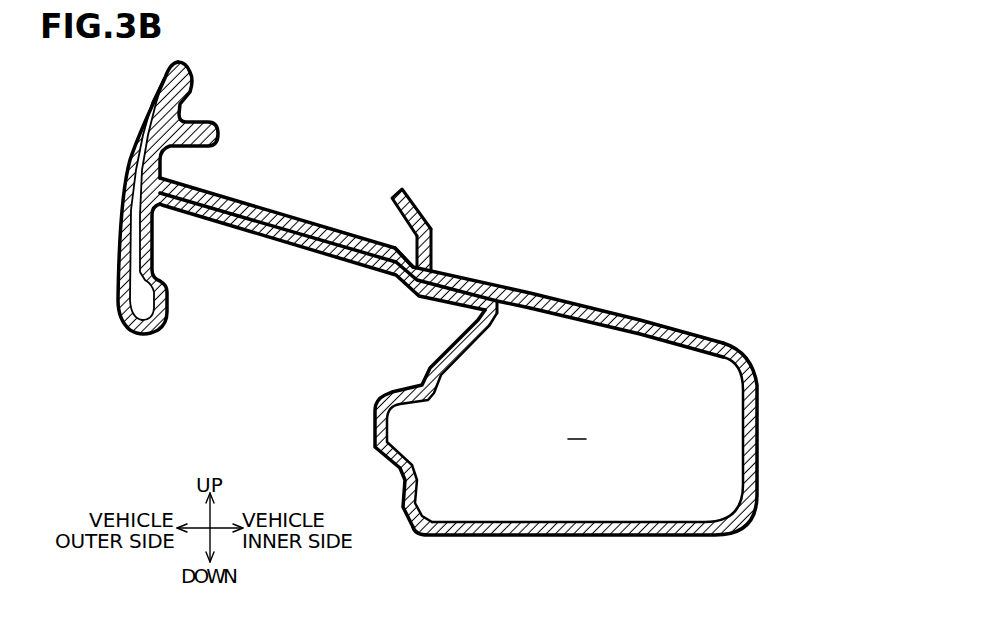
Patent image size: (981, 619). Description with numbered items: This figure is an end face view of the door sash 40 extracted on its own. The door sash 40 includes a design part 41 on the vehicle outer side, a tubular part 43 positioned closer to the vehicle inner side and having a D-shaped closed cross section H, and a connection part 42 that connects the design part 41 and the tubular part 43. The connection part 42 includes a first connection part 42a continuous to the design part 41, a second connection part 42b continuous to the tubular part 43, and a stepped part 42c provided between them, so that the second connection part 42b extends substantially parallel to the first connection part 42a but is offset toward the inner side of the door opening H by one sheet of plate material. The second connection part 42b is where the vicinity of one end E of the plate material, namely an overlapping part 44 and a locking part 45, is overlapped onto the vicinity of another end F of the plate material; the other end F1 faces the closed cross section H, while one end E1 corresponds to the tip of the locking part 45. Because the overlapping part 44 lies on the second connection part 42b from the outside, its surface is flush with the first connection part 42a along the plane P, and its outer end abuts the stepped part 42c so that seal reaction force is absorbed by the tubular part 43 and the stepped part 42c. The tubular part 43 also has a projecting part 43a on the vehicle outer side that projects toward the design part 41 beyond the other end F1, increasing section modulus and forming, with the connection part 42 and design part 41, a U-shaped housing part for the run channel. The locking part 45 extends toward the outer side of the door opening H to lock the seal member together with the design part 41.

The door sash 40 is at (451, 330).
The design part 41 is at (118, 303).
The connection part 42 is at (441, 266).
The first connection part 42a is at (398, 245).
The second connection part 42b is at (470, 316).
The stepped part 42c is at (384, 282).
The tubular part 43 is at (520, 454).
The projecting part 43a is at (375, 420).
The overlapping part 44 is at (509, 262).
The locking part 45 is at (405, 182).
The one end of plate material E is at (503, 267).
The one end of the plate material E1 is at (397, 192).
The another end of plate material F is at (483, 314).
The another end of the plate material F1 is at (500, 305).
The closed cross section H is at (577, 427).
The plane P is at (742, 352).